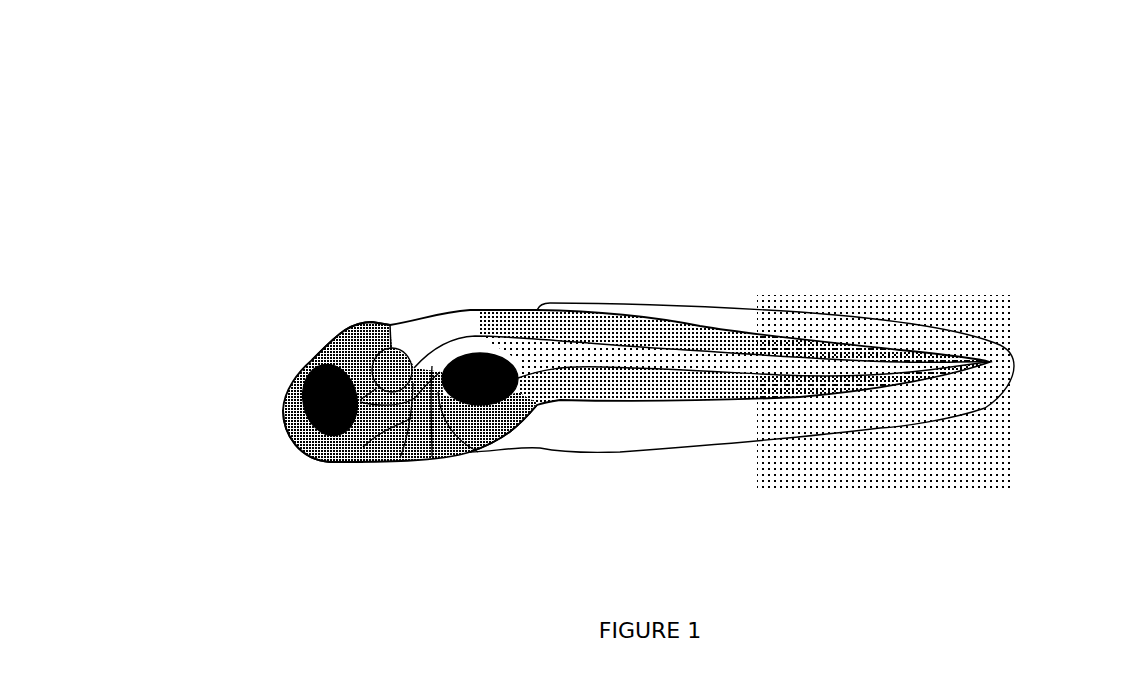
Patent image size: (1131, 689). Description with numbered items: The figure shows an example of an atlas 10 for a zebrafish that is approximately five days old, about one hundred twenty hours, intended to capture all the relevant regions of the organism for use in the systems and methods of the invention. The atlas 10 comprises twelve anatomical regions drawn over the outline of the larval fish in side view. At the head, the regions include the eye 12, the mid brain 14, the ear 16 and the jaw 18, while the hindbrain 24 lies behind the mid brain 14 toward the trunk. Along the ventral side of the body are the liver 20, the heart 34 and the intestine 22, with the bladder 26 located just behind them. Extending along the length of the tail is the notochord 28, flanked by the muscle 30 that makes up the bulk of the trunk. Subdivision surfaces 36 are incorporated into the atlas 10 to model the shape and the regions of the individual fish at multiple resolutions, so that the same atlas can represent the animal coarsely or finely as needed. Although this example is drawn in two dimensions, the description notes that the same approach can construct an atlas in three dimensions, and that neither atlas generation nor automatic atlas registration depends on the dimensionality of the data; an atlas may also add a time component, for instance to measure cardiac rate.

The atlas 10 is at (985, 163).
The eye 12 is at (307, 380).
The mid brain 14 is at (347, 330).
The ear 16 is at (390, 368).
The jaw 18 is at (308, 448).
The liver 20 is at (385, 461).
The intestine 22 is at (473, 450).
The hindbrain 24 is at (485, 322).
The bladder 26 is at (487, 400).
The notochord 28 is at (622, 360).
The muscle 30 is at (745, 323).
The heart 34 is at (422, 448).
The subdivision surfaces 36 is at (643, 410).